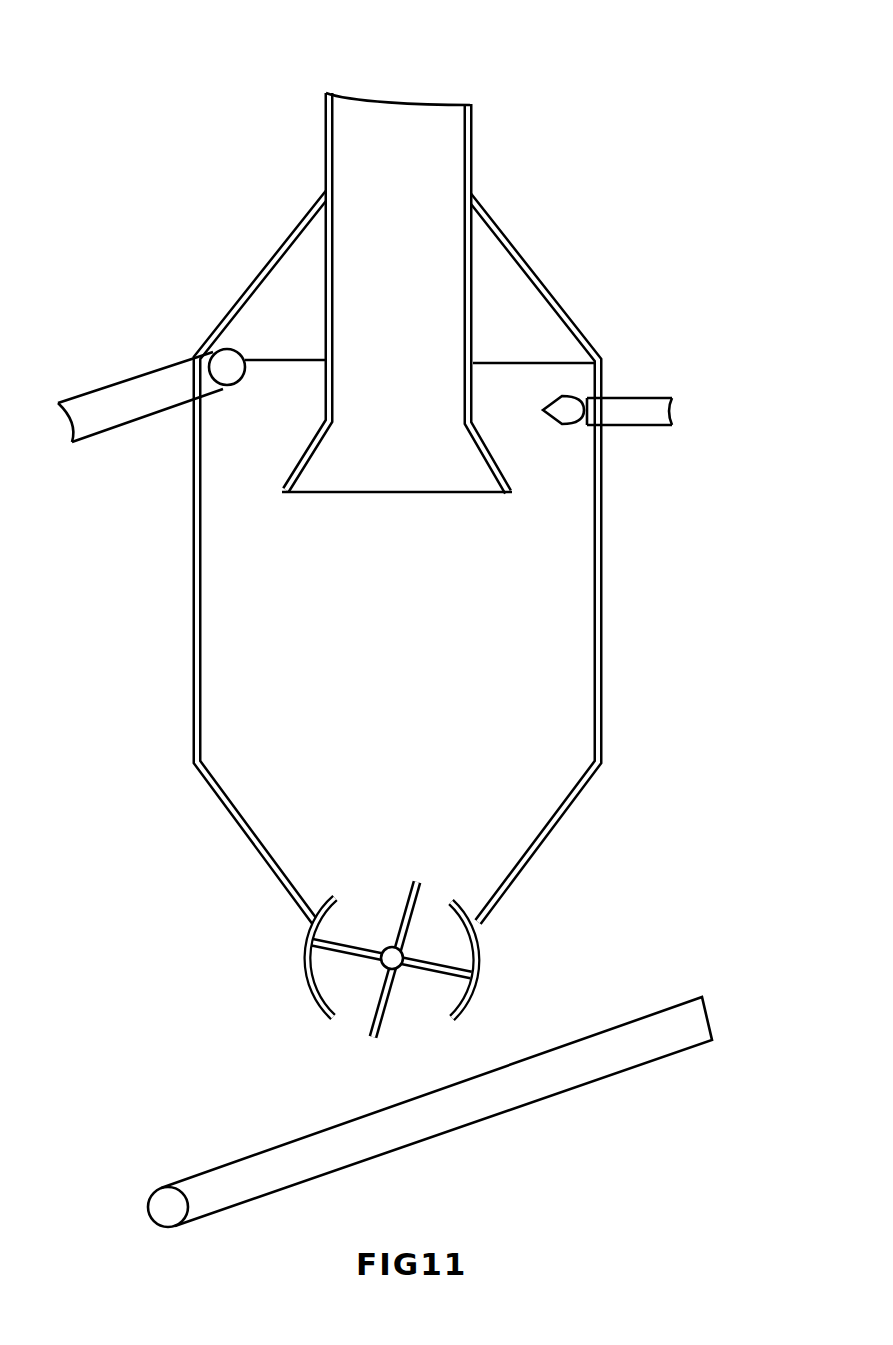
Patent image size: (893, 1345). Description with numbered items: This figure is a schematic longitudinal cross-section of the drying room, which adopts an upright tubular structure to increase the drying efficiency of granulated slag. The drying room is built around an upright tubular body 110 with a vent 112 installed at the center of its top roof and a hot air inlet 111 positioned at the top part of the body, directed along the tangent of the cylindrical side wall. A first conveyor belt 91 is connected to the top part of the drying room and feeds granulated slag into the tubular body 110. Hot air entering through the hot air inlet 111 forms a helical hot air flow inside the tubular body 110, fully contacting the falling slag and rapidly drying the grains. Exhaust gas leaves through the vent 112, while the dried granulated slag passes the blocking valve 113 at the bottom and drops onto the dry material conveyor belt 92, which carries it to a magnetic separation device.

The first conveyor belt 91 is at (160, 388).
The dry material conveyor belt 92 is at (678, 1030).
The upright tubular body 110 is at (562, 688).
The hot air inlet 111 is at (638, 397).
The vent 112 is at (428, 142).
The blocking valve 113 is at (335, 985).